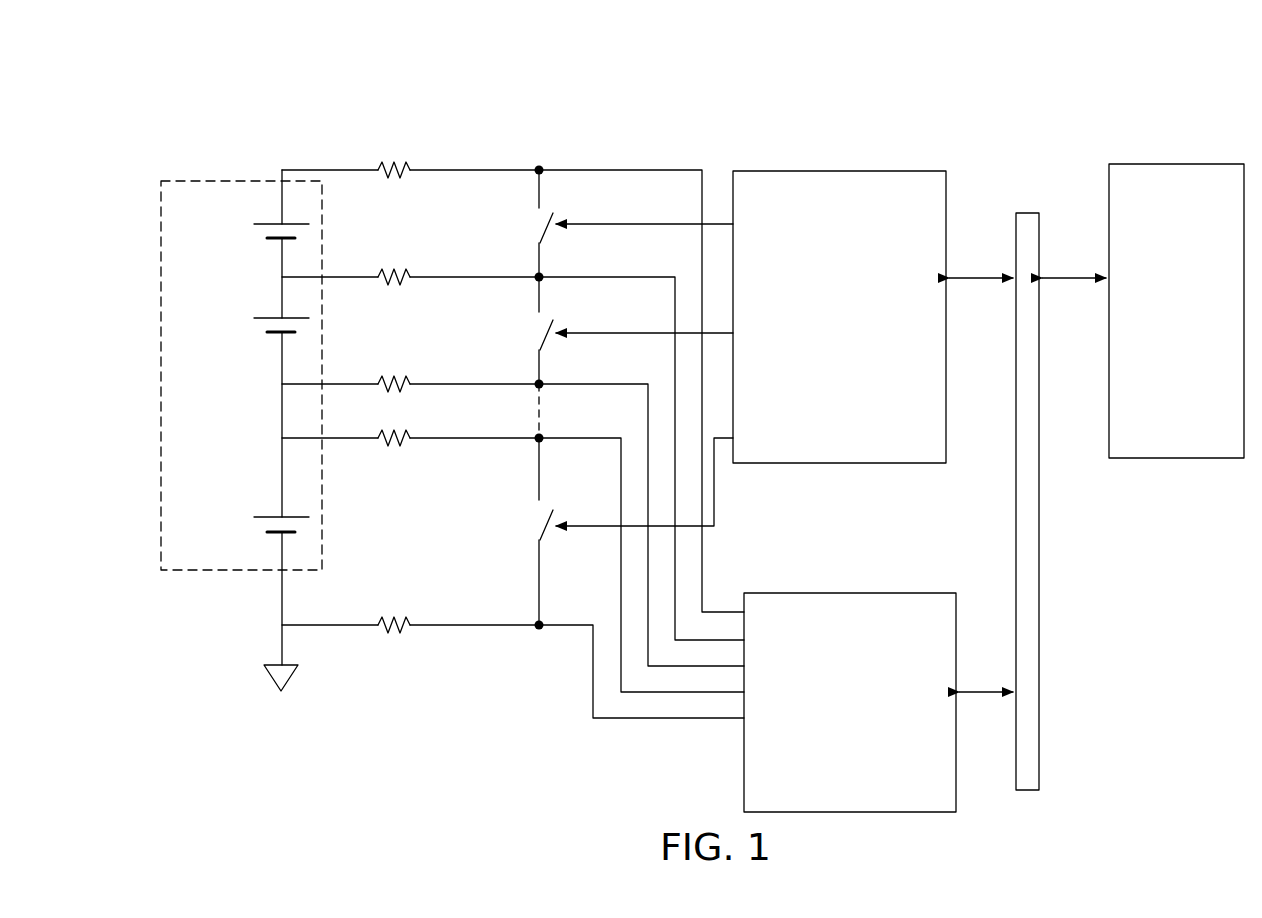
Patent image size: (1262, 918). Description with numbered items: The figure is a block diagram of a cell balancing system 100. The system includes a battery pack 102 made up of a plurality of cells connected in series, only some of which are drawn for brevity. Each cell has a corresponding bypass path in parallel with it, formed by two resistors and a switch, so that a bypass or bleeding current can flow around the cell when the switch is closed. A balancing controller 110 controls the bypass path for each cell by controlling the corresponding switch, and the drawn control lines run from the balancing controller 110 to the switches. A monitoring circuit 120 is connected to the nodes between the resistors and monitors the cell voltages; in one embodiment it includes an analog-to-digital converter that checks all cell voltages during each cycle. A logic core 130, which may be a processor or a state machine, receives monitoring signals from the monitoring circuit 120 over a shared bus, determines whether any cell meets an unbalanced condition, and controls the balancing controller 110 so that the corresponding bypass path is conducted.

The cell balancing system 100 is at (188, 116).
The battery pack 102 is at (232, 181).
The balancing controller 110 is at (839, 317).
The monitoring circuit 120 is at (850, 702).
The logic core 130 is at (1176, 311).